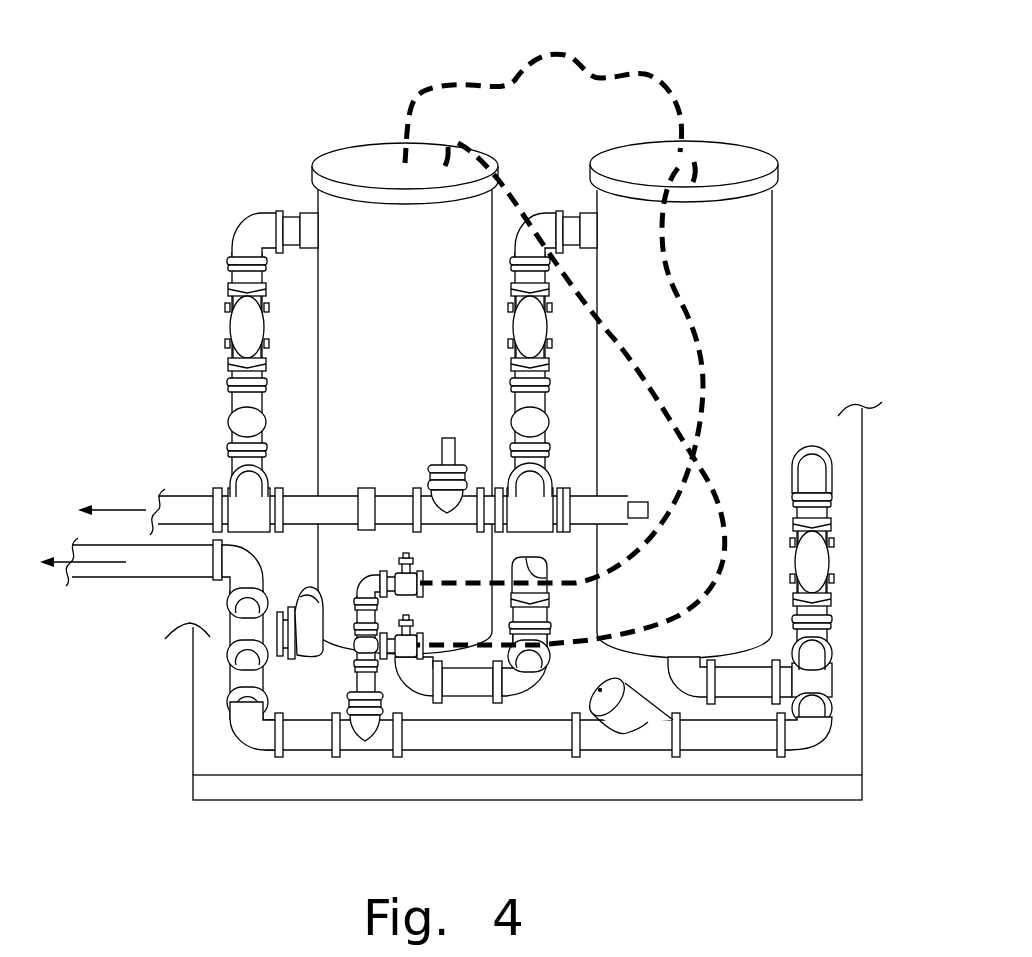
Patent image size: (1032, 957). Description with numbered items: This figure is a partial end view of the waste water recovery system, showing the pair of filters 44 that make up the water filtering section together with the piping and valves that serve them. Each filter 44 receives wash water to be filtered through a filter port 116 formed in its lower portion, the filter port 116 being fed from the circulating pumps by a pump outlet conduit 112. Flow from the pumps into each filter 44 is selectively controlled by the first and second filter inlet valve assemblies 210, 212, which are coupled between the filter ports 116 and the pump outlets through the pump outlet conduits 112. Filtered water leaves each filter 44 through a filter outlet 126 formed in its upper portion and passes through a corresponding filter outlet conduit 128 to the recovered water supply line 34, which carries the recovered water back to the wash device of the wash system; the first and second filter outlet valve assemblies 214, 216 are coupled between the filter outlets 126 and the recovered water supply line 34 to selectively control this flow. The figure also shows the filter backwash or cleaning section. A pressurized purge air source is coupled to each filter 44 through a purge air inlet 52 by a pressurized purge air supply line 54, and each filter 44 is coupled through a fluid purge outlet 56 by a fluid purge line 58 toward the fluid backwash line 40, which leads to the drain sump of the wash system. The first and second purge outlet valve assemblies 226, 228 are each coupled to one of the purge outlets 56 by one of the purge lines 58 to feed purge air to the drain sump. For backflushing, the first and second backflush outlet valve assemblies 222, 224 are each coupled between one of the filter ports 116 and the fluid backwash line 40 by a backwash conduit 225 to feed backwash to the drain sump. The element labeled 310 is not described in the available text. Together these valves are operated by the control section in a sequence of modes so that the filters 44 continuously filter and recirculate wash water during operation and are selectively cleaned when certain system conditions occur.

The recovered water supply line 34 is at (197, 503).
The fluid backwash line 40 is at (155, 563).
The filter 44 is at (373, 127).
The purge air inlet 52 is at (393, 153).
The pressurized purge air supply line 54 is at (427, 88).
The fluid purge outlet 56 is at (440, 163).
The fluid purge line 58 is at (705, 402).
The pump outlet conduit 112 is at (822, 636).
The filter port 116 is at (682, 657).
The filter outlet 126 is at (300, 208).
The filter outlet conduit 128 is at (258, 222).
The first filter inlet valve assembly 210 is at (820, 563).
The second filter inlet valve assembly 212 is at (567, 550).
The first filter outlet valve assembly 214 is at (528, 332).
The second filter outlet valve assembly 216 is at (252, 333).
The first backflush outlet valve assembly 222 is at (622, 728).
The second backflush outlet valve assembly 224 is at (313, 640).
The backwash conduit 225 is at (473, 742).
The first purge outlet valve assembly 226 is at (400, 570).
The second purge outlet valve assembly 228 is at (420, 638).
The relief valve 310 is at (447, 448).